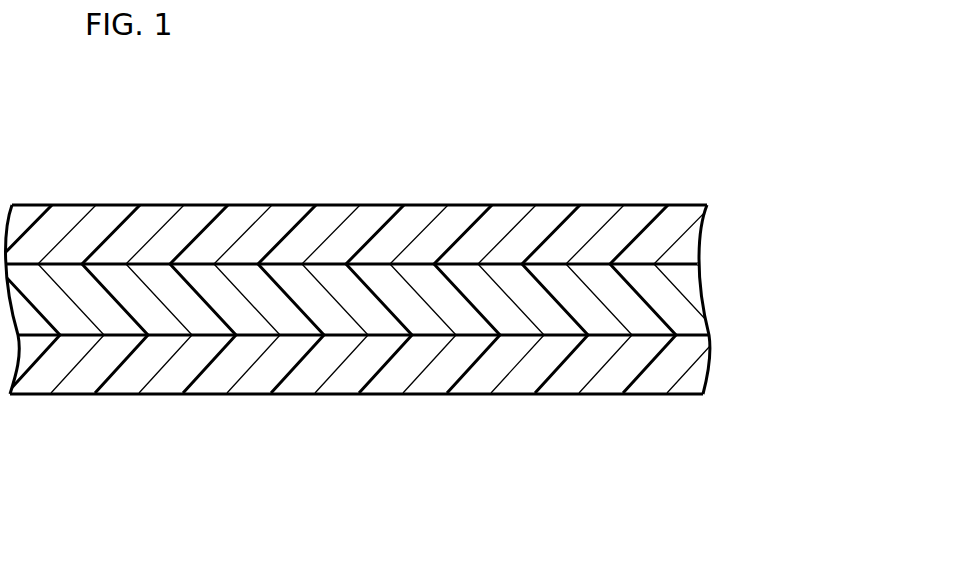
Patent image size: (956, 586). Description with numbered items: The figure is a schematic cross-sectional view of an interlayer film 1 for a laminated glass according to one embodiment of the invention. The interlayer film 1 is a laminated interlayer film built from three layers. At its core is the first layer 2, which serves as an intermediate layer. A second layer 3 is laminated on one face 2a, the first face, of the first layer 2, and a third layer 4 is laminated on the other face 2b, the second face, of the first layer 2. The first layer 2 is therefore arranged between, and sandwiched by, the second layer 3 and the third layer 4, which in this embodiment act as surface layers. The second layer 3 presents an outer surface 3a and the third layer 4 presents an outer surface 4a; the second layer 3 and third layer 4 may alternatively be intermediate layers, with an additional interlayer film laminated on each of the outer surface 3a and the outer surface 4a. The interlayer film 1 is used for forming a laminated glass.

The interlayer film 1 is at (103, 150).
The first layer 2 is at (719, 302).
The one face (first face) of the first layer 2a is at (497, 263).
The other face (second face) of the first layer 2b is at (500, 336).
The second layer 3 is at (718, 232).
The outer surface of the second layer 3a is at (626, 205).
The third layer 4 is at (724, 360).
The outer surface of the third layer 4a is at (632, 395).